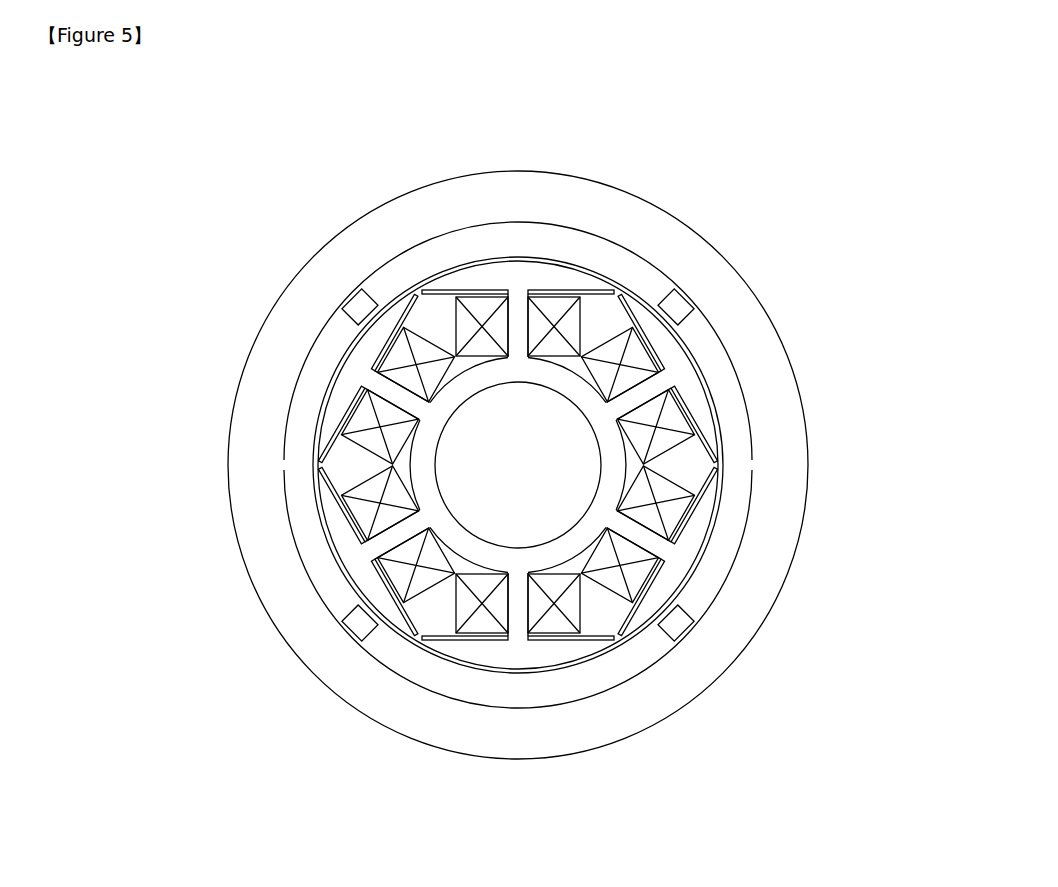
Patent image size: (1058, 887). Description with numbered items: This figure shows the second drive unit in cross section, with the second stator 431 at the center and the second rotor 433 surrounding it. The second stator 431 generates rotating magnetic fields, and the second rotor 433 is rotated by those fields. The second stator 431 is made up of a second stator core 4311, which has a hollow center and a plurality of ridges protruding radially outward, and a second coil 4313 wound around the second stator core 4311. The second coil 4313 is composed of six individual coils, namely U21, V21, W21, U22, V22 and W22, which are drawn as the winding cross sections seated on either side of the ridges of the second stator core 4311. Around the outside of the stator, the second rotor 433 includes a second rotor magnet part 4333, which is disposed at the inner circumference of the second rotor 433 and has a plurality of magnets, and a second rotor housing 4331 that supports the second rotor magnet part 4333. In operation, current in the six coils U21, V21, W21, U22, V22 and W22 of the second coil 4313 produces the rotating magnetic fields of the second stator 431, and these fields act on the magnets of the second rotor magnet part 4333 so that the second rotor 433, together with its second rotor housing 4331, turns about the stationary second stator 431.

The coil U21 is at (514, 330).
The coil U22 is at (520, 610).
The coil V21 is at (641, 393).
The coil V22 is at (396, 530).
The coil W21 is at (640, 540).
The coil W22 is at (398, 400).
The second stator 431 is at (637, 465).
The second stator core 4311 is at (681, 383).
The second coil 4313 is at (688, 415).
The second rotor 433 is at (592, 465).
The second rotor housing 4331 is at (773, 469).
The second rotor magnet part 4333 is at (735, 507).